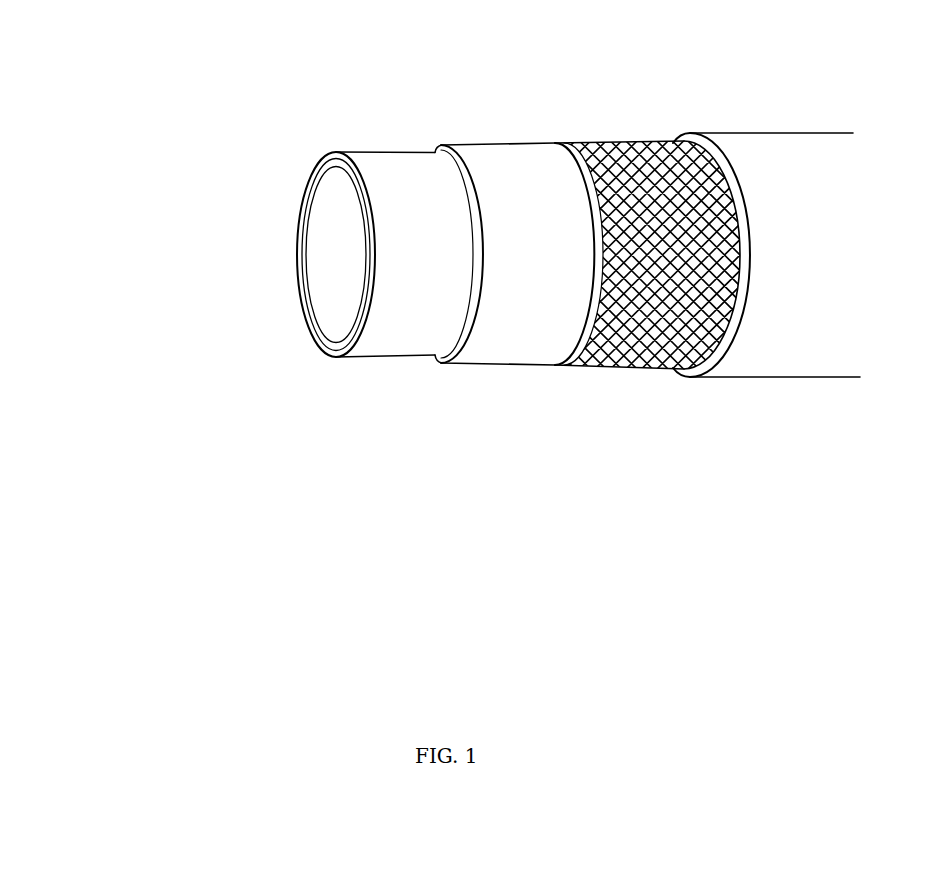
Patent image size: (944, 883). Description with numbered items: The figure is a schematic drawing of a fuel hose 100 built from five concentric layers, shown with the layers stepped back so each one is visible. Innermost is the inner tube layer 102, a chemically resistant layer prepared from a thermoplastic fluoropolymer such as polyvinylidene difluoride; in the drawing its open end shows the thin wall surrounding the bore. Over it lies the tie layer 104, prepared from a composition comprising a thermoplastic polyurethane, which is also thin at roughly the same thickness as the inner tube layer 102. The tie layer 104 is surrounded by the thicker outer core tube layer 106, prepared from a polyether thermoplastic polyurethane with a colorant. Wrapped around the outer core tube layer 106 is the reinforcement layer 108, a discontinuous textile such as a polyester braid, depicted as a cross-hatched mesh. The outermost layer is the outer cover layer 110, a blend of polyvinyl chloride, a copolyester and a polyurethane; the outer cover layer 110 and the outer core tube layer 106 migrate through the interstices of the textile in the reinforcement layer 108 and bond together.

The fuel hose 100 is at (715, 72).
The inner tube layer 102 is at (322, 266).
The tie layer 104 is at (307, 327).
The outer core tube layer 106 is at (507, 363).
The reinforcement layer 108 is at (630, 367).
The outer cover layer 110 is at (717, 377).